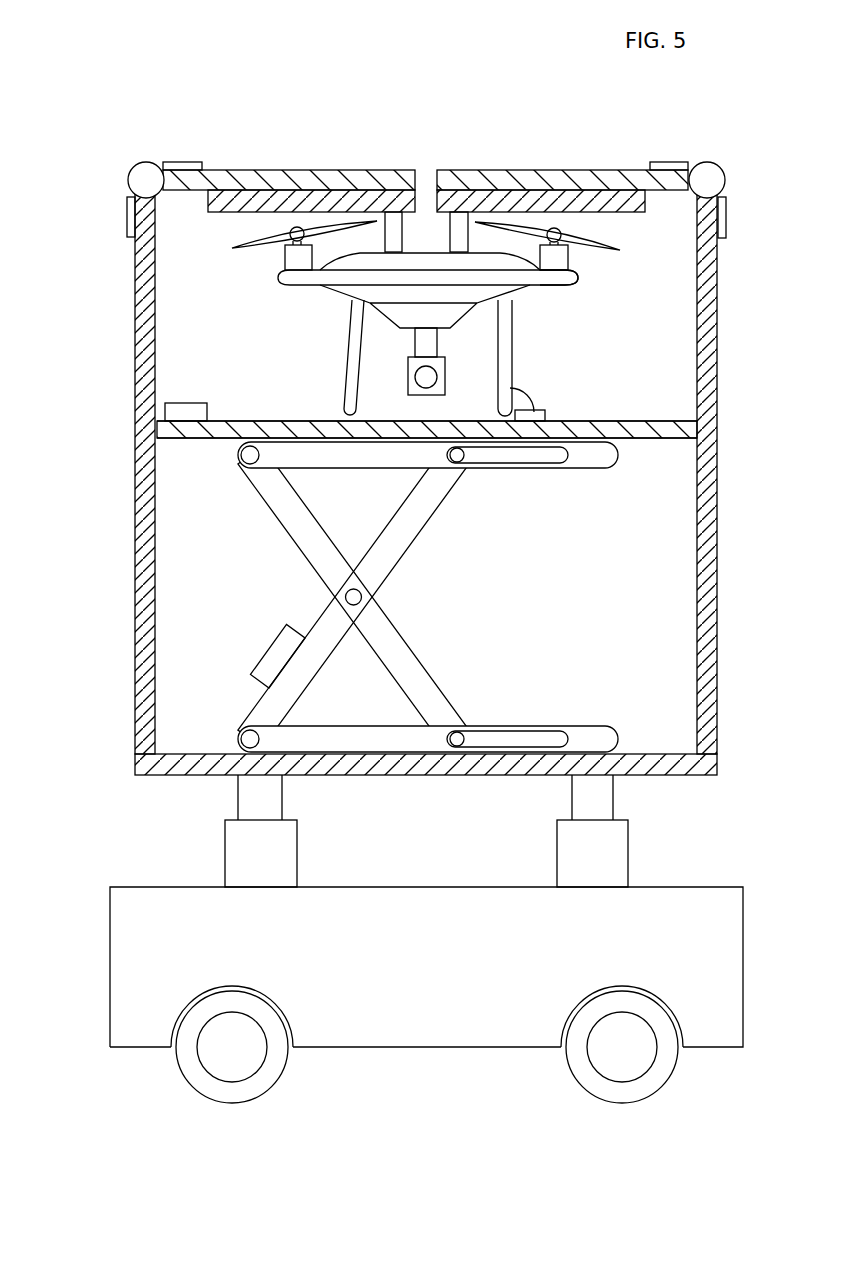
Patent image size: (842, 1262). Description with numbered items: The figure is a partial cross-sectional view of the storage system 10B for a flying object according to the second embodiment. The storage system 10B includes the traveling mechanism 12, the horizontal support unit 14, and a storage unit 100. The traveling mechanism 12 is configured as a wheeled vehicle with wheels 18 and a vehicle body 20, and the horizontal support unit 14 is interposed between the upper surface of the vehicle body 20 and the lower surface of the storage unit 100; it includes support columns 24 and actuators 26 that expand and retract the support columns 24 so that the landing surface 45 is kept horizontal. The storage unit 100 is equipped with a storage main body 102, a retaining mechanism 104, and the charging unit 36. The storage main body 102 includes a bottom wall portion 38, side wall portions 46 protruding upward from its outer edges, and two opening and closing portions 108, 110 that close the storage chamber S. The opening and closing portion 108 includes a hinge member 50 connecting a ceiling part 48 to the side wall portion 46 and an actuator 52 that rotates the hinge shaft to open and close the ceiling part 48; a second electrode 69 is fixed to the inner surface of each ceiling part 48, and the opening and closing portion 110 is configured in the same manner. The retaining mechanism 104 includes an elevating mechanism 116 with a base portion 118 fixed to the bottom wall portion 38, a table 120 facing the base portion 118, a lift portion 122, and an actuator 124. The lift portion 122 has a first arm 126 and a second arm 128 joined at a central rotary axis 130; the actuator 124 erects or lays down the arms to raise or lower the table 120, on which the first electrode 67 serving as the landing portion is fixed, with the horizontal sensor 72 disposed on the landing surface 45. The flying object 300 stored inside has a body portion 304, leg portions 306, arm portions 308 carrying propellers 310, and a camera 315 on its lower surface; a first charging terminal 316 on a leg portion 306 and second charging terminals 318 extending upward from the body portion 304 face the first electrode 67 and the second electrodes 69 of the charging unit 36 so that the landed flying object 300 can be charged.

The storage system 10B is at (125, 79).
The storage unit 100 is at (128, 165).
The storage main body 102 is at (414, 505).
The storage chamber S is at (165, 330).
The opening and closing portion 108 is at (365, 157).
The opening and closing portion 110 is at (525, 157).
The hinge member 50 is at (140, 178).
The actuator 52 is at (126, 207).
The ceiling part 48 is at (277, 183).
The second electrode 69 is at (209, 213).
The propeller 310 is at (254, 250).
The second charging terminal 318 is at (457, 238).
The flying object 300 is at (283, 345).
The body portion 304 is at (447, 280).
The leg portion 306 is at (350, 377).
The arm portion 308 is at (563, 284).
The camera 315 is at (410, 380).
The first charging terminal 316 is at (545, 412).
The horizontal sensor 72 is at (185, 402).
The charging unit 36 is at (427, 414).
The landing surface 45 is at (647, 418).
The first electrode 67 is at (658, 432).
The retaining mechanism 104 is at (222, 453).
The elevating mechanism 116 is at (427, 547).
The table 120 is at (588, 458).
The base portion 118 is at (590, 733).
The lift portion 122 is at (340, 597).
The first arm 126 is at (420, 513).
The second arm 128 is at (420, 678).
The rotary axis 130 is at (362, 594).
The actuator 124 is at (263, 662).
The side wall portion 46 is at (705, 500).
The bottom wall portion 38 is at (366, 762).
The horizontal support unit 14 is at (195, 825).
The support column 24 is at (248, 802).
The actuator 26 is at (233, 853).
The traveling mechanism 12 is at (90, 905).
The vehicle body 20 is at (730, 922).
The wheel 18 is at (190, 1065).